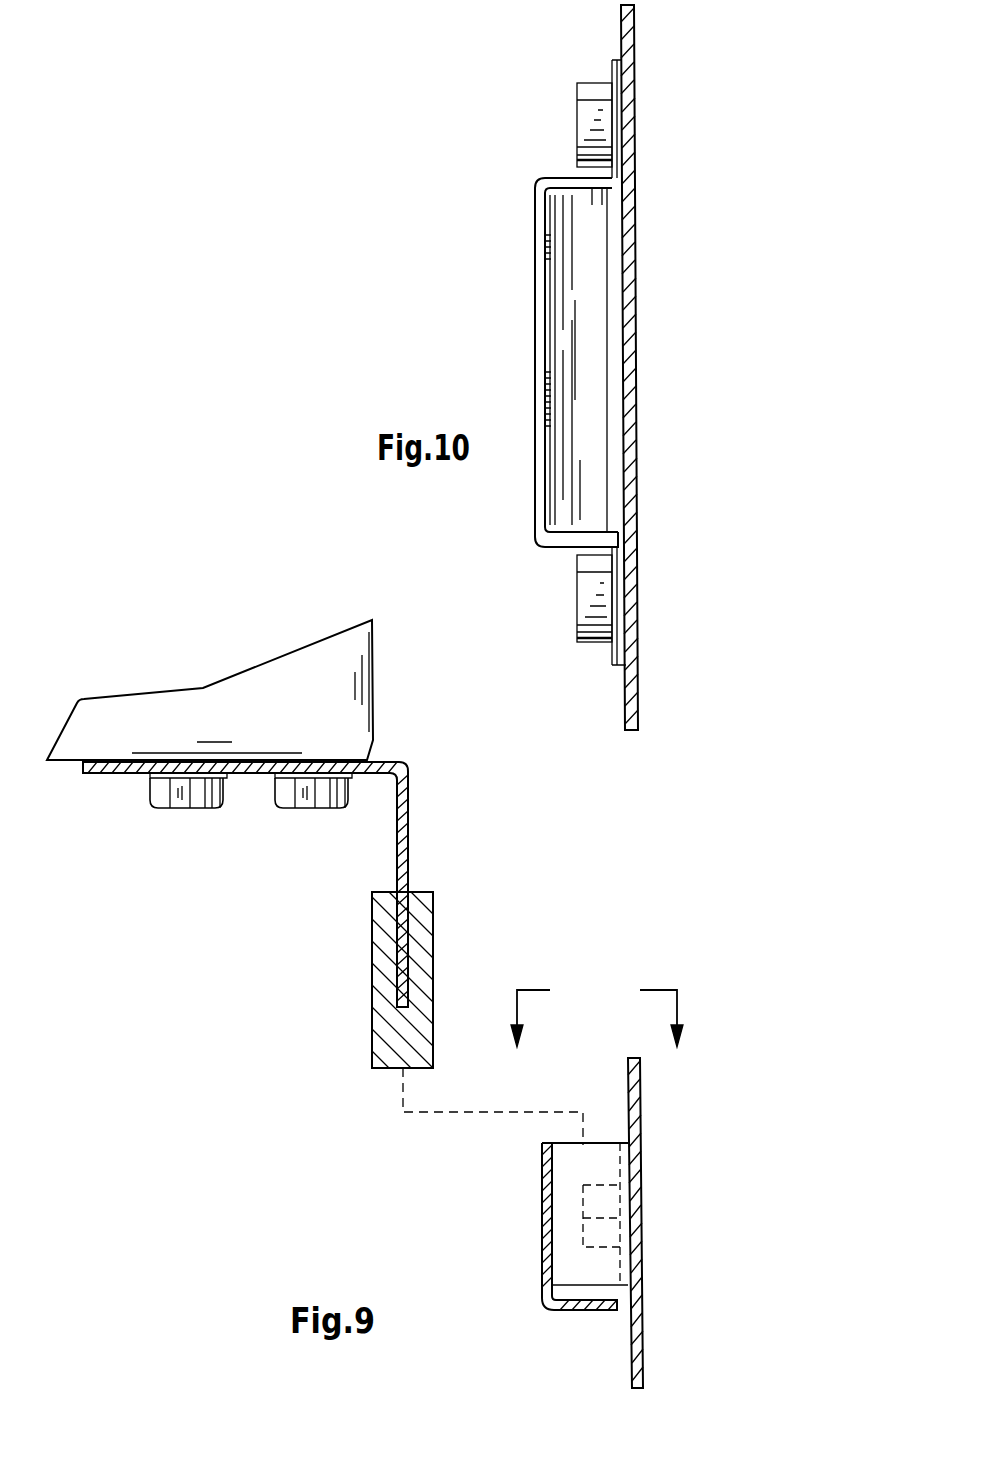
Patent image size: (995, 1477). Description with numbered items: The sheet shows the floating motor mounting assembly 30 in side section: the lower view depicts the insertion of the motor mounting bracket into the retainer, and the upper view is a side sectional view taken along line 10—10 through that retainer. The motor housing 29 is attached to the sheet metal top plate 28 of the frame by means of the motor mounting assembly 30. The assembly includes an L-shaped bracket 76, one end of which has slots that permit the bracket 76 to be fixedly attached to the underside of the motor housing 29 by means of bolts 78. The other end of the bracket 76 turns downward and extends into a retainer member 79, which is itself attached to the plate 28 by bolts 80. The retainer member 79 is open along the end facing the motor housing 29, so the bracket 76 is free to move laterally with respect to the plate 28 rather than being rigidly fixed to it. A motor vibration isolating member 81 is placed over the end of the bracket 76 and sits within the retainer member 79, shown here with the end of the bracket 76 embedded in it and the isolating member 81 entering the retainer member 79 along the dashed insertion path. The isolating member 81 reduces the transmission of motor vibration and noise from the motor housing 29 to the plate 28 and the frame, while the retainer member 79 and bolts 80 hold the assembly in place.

In FIG. 9, the section line 10— 10 is at (599, 1032).
In FIG. 10, the top plate 28 is at (628, 683).
In FIG. 9, the top plate 28 is at (640, 1107).
In FIG. 9, the motor housing 29 is at (368, 698).
In FIG. 9, the motor mounting assembly 30 is at (482, 990).
In FIG. 9, the L-shaped bracket 76 is at (397, 832).
In FIG. 9, the bolts 78 is at (188, 808).
In FIG. 10, the retainer member 79 is at (535, 282).
In FIG. 9, the retainer member 79 is at (545, 1213).
In FIG. 10, the bolts 80 is at (593, 113).
In FIG. 9, the bolts 80 is at (597, 1228).
In FIG. 9, the motor vibration isolating member 81 is at (372, 945).